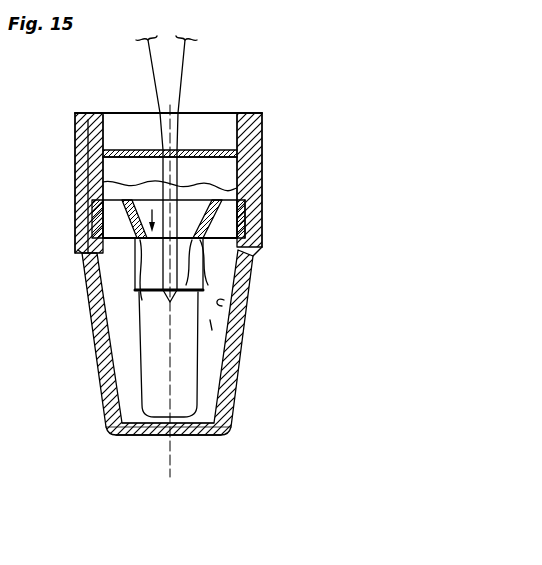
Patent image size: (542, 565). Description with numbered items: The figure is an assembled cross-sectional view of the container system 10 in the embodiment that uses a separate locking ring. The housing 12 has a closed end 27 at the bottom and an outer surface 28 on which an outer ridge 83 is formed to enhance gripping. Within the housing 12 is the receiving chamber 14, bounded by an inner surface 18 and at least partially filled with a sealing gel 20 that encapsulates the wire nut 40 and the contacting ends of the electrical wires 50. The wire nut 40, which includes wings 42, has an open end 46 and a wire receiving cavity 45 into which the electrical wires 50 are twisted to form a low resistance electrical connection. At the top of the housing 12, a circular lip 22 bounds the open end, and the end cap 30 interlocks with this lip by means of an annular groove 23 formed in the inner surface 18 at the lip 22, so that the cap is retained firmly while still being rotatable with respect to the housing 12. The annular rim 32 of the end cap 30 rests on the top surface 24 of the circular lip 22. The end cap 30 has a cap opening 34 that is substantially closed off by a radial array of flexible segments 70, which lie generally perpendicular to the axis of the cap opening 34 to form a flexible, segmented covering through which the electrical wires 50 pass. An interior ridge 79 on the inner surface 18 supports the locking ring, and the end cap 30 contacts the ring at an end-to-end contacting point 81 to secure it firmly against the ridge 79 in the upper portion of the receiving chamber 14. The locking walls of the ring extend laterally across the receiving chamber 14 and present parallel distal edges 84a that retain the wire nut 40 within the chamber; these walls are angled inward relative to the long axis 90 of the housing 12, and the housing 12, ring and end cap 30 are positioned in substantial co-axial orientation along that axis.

The container system 10 is at (305, 23).
The housing 12 is at (263, 178).
The receiving chamber 14 is at (220, 258).
The inner surface 18 is at (224, 298).
The sealing gel 20 is at (263, 162).
The circular lip 22 is at (82, 133).
The annular groove 23 is at (260, 150).
The top surface 24 is at (263, 137).
The closed end 27 is at (203, 437).
The outer surface 28 is at (240, 373).
The end cap 30 is at (258, 117).
The annular rim 32 is at (263, 127).
The cap opening 34 is at (195, 123).
The wire nut 40 is at (243, 330).
The wings 42 is at (168, 354).
The wire receiving cavity 45 is at (105, 225).
The open end 46 is at (203, 340).
The electrical wires 50 is at (177, 72).
The flexible segments 70 is at (207, 150).
The interior ridge 79 is at (263, 220).
The end-to-end contacting point 81 is at (240, 187).
The outer ridge 83 is at (265, 258).
The distal edges 84a is at (245, 295).
The long axis 90 is at (172, 497).